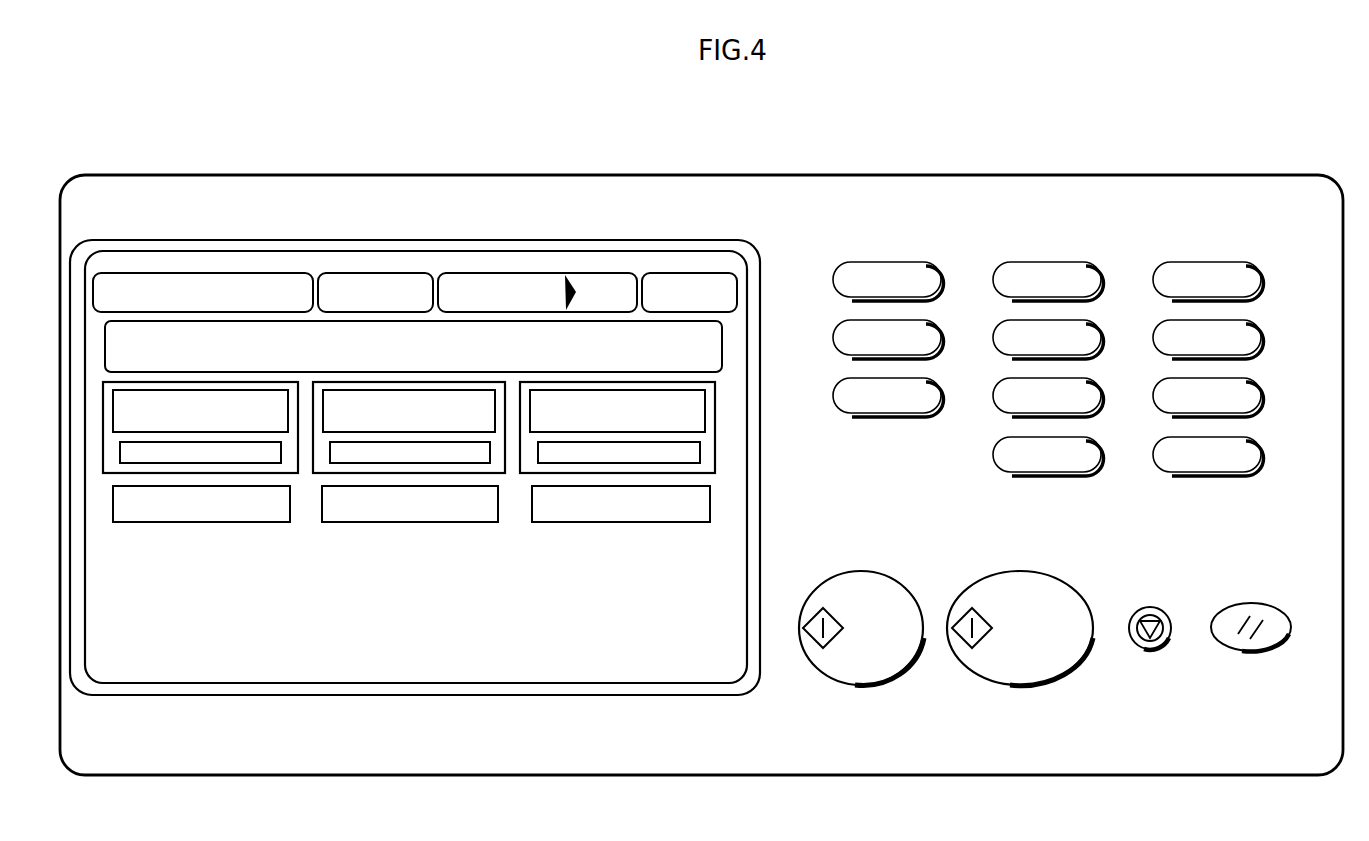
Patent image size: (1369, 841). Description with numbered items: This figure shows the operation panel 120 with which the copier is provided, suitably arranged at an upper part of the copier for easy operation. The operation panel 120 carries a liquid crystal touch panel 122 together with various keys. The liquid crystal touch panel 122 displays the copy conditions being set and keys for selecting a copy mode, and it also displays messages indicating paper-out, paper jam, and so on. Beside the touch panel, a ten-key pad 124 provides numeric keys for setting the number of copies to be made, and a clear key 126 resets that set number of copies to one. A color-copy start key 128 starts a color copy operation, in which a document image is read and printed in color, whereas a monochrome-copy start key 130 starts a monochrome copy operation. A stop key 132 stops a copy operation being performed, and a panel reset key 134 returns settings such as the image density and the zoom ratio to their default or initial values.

The operation panel 120 is at (574, 175).
The liquid crystal touch panel 122 is at (342, 243).
The ten-key pad 124 is at (1072, 218).
The clear key 126 is at (1263, 442).
The color-copy start key 128 is at (860, 568).
The monochrome-copy start key 130 is at (1008, 568).
The stop key 132 is at (1150, 603).
The panel reset key 134 is at (1248, 602).